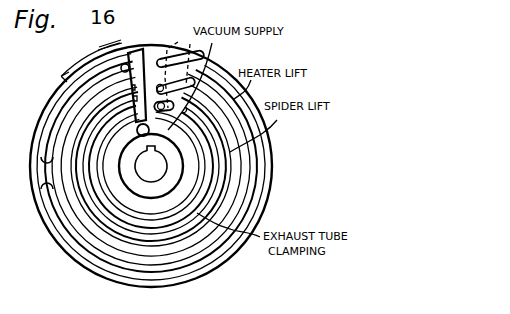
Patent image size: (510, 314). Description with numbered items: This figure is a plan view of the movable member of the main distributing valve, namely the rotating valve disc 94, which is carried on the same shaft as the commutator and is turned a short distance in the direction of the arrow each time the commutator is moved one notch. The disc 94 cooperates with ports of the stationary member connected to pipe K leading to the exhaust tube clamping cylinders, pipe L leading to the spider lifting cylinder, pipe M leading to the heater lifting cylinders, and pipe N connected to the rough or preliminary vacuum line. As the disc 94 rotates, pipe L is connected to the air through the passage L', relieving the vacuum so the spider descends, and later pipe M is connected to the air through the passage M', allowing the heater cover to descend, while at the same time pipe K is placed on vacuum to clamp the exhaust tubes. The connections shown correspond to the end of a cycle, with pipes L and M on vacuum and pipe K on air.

The rotating member of the main distributing valve 94 is at (51, 103).
The pipe M is at (134, 49).
The passage M' is at (194, 76).
The pipe L is at (160, 80).
The pipe K is at (137, 85).
The pipe N is at (152, 131).